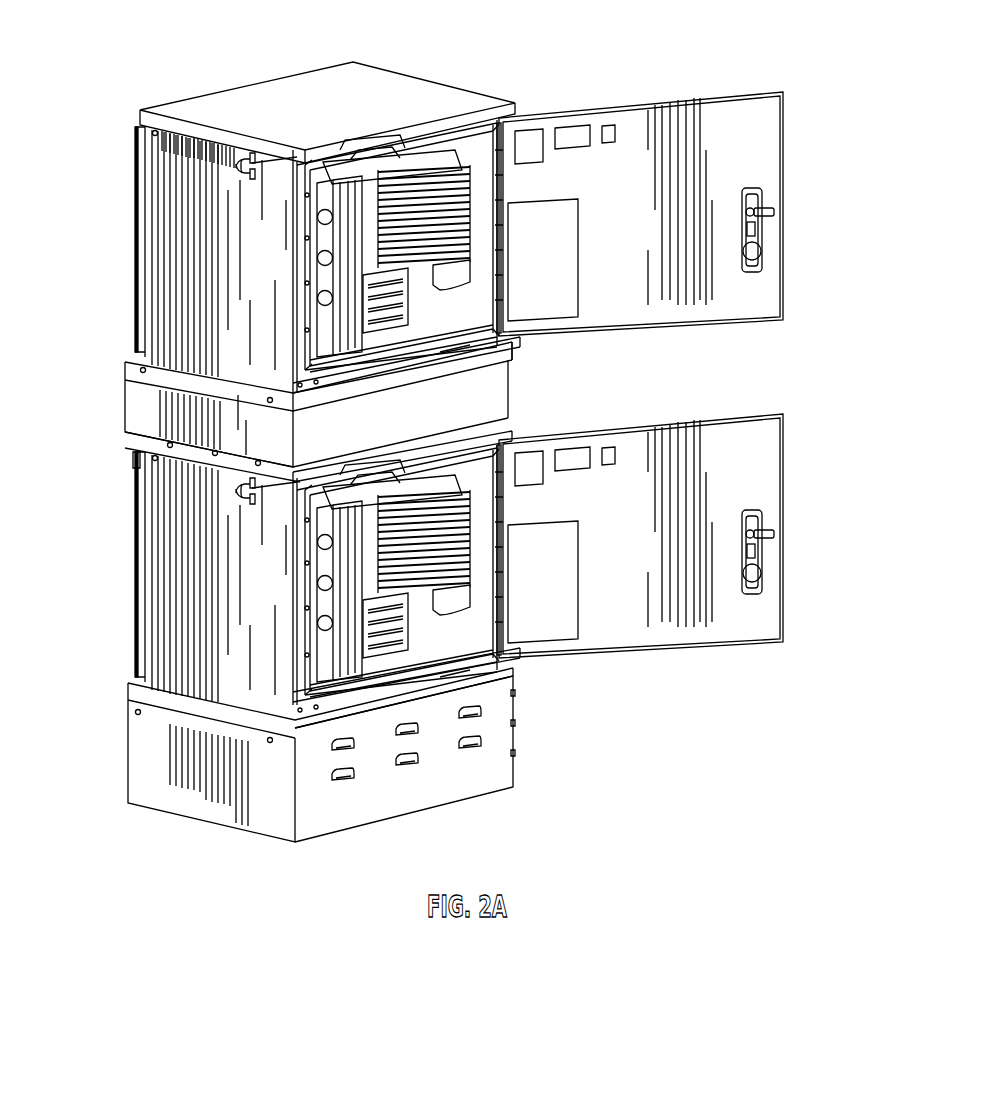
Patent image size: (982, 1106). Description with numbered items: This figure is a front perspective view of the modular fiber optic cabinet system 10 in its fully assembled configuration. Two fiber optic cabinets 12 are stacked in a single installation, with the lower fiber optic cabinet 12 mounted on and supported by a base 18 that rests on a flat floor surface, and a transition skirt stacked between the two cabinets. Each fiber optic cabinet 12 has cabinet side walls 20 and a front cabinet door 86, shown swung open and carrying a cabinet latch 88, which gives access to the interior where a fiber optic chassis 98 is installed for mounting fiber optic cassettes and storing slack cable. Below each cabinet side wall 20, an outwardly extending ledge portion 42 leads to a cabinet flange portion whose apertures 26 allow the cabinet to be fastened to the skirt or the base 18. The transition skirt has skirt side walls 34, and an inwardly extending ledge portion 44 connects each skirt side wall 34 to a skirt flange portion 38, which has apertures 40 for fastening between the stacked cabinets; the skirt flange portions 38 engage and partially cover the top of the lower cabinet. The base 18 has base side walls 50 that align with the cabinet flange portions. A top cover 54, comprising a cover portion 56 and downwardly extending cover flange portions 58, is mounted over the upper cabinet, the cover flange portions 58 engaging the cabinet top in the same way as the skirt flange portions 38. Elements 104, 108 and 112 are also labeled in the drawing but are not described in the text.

The modular fiber optic cabinet system 10 is at (88, 66).
The fiber optic cabinet 12 is at (446, 378).
The base 18 is at (310, 755).
The cabinet side wall 20 is at (150, 263).
The apertures 26 is at (168, 383).
The skirt side wall 34 is at (143, 413).
The skirt flange portion 38 is at (304, 420).
The apertures 40 is at (175, 458).
The outwardly extending ledge portion 42 is at (160, 352).
The inwardly extending ledge portion 44 is at (140, 441).
The base side wall 50 is at (153, 768).
The top cover 54 is at (281, 92).
The cover portion 56 is at (275, 88).
The cover flange portion 58 is at (178, 128).
The front cabinet door 86 is at (671, 375).
The cabinet latch 88 is at (757, 228).
The fiber optic chassis 98 is at (466, 150).
The spacer front wall 104 is at (490, 390).
The vented base panel 108 is at (505, 727).
The bottom flange 112 is at (515, 356).